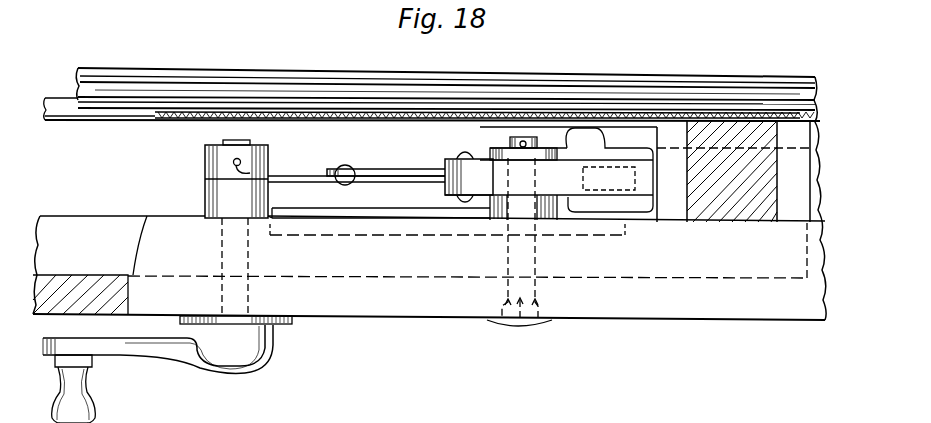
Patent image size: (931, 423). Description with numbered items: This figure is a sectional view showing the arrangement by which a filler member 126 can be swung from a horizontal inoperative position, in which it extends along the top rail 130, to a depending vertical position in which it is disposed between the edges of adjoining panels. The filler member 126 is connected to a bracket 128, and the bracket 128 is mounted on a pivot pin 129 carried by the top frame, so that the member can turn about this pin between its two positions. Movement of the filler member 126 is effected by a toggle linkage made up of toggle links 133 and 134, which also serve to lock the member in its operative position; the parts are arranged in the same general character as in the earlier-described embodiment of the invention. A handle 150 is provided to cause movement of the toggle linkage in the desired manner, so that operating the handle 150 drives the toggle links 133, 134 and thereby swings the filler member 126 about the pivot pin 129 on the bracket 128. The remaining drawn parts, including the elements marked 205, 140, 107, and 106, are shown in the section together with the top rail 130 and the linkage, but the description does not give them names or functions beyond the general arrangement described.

The barrel and stock 205 is at (371, 70).
The cylinder 140 is at (236, 141).
The toggle link 134 is at (284, 173).
The toggle link 133 is at (412, 148).
The bracket 128 is at (494, 165).
The pivot pin 129 is at (530, 138).
The filler member 126 is at (637, 204).
The bar 107 is at (390, 212).
The frame 106 is at (636, 139).
The top rail 130 is at (105, 262).
The handle 150 is at (132, 360).